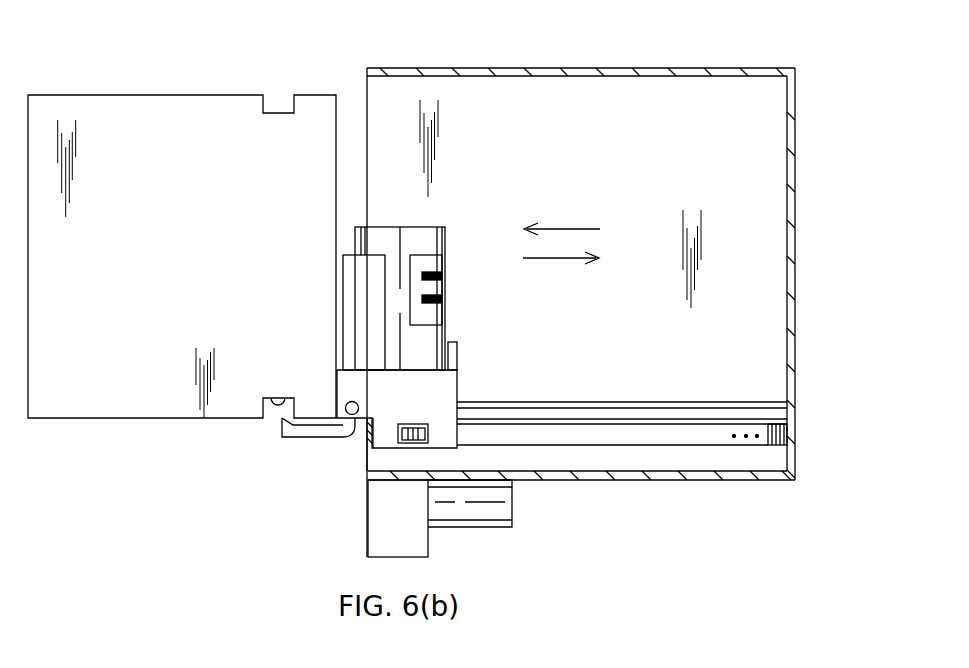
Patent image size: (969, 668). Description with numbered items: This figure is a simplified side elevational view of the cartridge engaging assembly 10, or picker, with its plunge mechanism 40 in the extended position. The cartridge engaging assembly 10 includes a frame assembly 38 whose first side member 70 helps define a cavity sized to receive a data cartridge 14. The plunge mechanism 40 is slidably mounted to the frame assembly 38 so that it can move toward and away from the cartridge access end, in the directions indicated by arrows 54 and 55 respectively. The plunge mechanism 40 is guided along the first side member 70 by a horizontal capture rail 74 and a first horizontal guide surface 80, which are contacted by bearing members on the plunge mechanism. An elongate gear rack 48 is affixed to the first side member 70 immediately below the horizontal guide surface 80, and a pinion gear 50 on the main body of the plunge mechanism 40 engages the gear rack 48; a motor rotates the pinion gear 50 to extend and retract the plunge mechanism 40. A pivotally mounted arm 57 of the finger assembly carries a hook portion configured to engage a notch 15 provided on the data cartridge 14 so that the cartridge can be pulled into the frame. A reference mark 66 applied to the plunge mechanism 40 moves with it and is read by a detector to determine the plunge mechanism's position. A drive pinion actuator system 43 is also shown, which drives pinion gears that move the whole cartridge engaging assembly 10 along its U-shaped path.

The cartridge engaging assembly 10 is at (341, 34).
The data cartridge 14 is at (172, 84).
The notch 15 is at (285, 398).
The frame assembly 38 is at (619, 258).
The plunge mechanism 40 is at (404, 366).
The drive pinion actuator system 43 is at (472, 538).
The gear rack 48 is at (773, 445).
The pinion gear 50 is at (397, 430).
The arrow 54 is at (580, 229).
The arrow 55 is at (542, 258).
The arm 57 is at (295, 437).
The reference mark 66 is at (450, 287).
The first side member 70 is at (652, 68).
The horizontal capture rail 74 is at (593, 402).
The first horizontal guide surface 80 is at (670, 418).